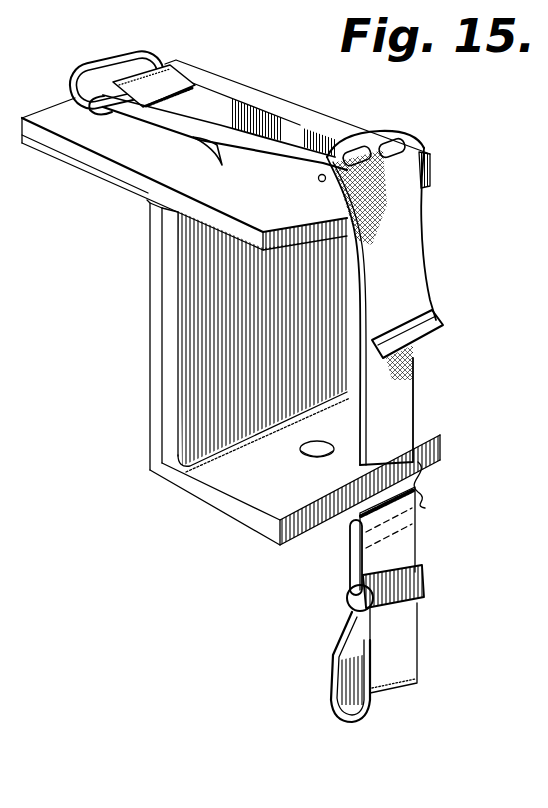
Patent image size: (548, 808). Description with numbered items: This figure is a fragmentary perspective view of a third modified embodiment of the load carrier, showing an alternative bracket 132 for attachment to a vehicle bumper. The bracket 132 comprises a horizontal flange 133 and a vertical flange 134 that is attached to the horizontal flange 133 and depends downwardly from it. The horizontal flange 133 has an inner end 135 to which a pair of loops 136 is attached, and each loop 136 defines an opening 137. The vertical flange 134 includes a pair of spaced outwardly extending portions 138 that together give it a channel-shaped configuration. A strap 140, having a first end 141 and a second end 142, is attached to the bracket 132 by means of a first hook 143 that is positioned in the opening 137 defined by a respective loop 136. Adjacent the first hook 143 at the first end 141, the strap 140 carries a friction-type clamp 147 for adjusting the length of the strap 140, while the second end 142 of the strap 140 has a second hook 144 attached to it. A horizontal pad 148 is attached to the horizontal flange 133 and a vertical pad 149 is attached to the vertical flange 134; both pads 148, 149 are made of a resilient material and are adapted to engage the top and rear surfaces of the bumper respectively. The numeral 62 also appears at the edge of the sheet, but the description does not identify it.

The bracket 132 is at (385, 130).
The horizontal flange 133 is at (236, 90).
The vertical flange 134 is at (160, 290).
The inner end 135 is at (43, 110).
The loop 136 is at (176, 56).
The opening 137 is at (132, 52).
The outwardly extending portion 138 is at (222, 240).
The strap 140 is at (420, 222).
The first end 141 is at (282, 124).
The second end 142 is at (410, 548).
The first hook 143 is at (130, 116).
The second hook 144 is at (412, 688).
The friction-type clamp 147 is at (406, 144).
The horizontal pad 148 is at (104, 185).
The vertical pad 149 is at (150, 346).
The adjacent element 62 is at (537, 629).